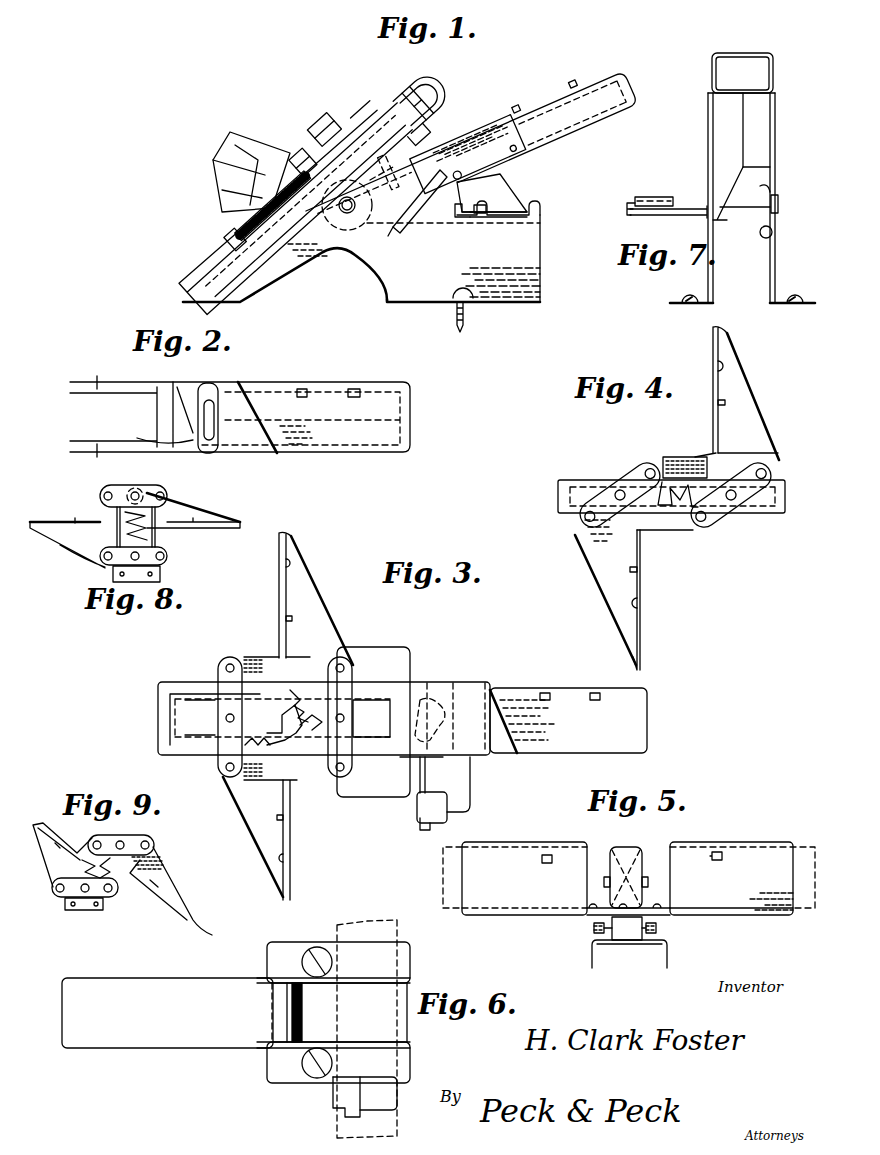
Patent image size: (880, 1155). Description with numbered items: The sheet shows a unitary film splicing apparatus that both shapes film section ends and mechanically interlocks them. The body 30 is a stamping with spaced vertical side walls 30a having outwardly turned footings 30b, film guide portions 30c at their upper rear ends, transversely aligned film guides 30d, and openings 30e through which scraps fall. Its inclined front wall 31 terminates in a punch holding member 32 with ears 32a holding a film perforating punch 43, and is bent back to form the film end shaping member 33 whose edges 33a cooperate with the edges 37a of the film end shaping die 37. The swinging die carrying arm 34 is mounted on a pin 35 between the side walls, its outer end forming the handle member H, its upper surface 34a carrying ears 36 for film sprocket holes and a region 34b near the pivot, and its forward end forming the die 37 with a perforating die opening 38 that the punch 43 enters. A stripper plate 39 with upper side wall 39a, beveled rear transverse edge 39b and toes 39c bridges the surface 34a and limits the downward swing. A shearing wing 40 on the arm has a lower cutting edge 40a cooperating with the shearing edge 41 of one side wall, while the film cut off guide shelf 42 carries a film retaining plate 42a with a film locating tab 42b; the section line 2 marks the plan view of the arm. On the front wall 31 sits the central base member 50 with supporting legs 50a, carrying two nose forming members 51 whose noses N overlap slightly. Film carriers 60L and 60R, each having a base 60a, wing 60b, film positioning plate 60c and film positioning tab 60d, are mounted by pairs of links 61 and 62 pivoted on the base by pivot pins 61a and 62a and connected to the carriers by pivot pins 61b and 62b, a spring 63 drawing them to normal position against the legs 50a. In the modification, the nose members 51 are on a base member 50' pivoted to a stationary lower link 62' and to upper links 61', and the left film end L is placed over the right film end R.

In FIG. 1, the section line 2 is at (625, 73).
In FIG. 1, the body 30 is at (292, 273).
In FIG. 7, the body 30 is at (708, 135).
In FIG. 1, the side walls 30a is at (545, 275).
In FIG. 7, the side walls 30a is at (748, 292).
In FIG. 1, the footings 30b is at (488, 302).
In FIG. 7, the footings 30b is at (810, 298).
In FIG. 3, the footings 30b is at (395, 648).
In FIG. 6, the footings 30b is at (296, 950).
In FIG. 1, the film guide portions 30c is at (548, 211).
In FIG. 6, the film guide portions 30c is at (412, 1040).
In FIG. 6, the film guide 30d is at (335, 1005).
In FIG. 1, the openings 30e is at (376, 277).
In FIG. 1, the front wall 31 is at (380, 108).
In FIG. 3, the front wall 31 is at (483, 692).
In FIG. 6, the front wall 31 is at (167, 1013).
In FIG. 1, the punch holding member 32 is at (430, 102).
In FIG. 1, the punch holding ears 32a is at (418, 86).
In FIG. 3, the punch holding ears 32a is at (455, 688).
In FIG. 1, the film end shaping member 33 is at (418, 138).
In FIG. 3, the film end shaping member 33 is at (428, 682).
In FIG. 3, the edges 33a is at (470, 757).
In FIG. 1, the swinging die carrying arm 34 is at (530, 108).
In FIG. 2, the swinging die carrying arm 34 is at (194, 452).
In FIG. 1, the film receiving surface 34a is at (604, 72).
In FIG. 2, the film receiving surface 34a is at (330, 445).
In FIG. 3, the film receiving surface 34a is at (640, 722).
In FIG. 1, the slot 34b is at (370, 177).
In FIG. 2, the slot 34b is at (157, 405).
In FIG. 1, the pin 35 is at (345, 226).
In FIG. 7, the pin 35 is at (742, 209).
In FIG. 1, the ears 36 is at (575, 80).
In FIG. 2, the ears 36 is at (300, 388).
In FIG. 3, the ears 36 is at (594, 692).
In FIG. 1, the film end shaping die 37 is at (413, 210).
In FIG. 2, the film end shaping die 37 is at (172, 385).
In FIG. 2, the edges 37a is at (150, 438).
In FIG. 2, the perforating die opening 38 is at (214, 388).
In FIG. 1, the stripper plate 39 is at (480, 123).
In FIG. 2, the stripper plate 39 is at (247, 402).
In FIG. 3, the stripper plate 39 is at (500, 700).
In FIG. 1, the upper side wall 39a is at (494, 121).
In FIG. 2, the upper side wall 39a is at (262, 450).
In FIG. 2, the rear transverse edge 39b is at (265, 432).
In FIG. 3, the rear transverse edge 39b is at (525, 750).
In FIG. 1, the toes 39c is at (436, 237).
In FIG. 1, the shearing wing 40 is at (500, 204).
In FIG. 7, the shearing wing 40 is at (766, 189).
In FIG. 7, the lower cutting edge 40a is at (773, 237).
In FIG. 7, the shearing edge 41 is at (779, 200).
In FIG. 1, the film cut off guide shelf 42 is at (520, 221).
In FIG. 7, the film cut off guide shelf 42 is at (690, 208).
In FIG. 3, the film cut off guide shelf 42 is at (472, 803).
In FIG. 6, the film cut off guide shelf 42 is at (385, 1098).
In FIG. 1, the film retaining plate 42a is at (484, 218).
In FIG. 7, the film retaining plate 42a is at (655, 195).
In FIG. 3, the film retaining plate 42a is at (419, 804).
In FIG. 1, the film locating tab 42b is at (461, 219).
In FIG. 7, the film locating tab 42b is at (630, 214).
In FIG. 3, the film locating tab 42b is at (425, 828).
In FIG. 6, the film locating tab 42b is at (333, 1114).
In FIG. 1, the film perforating punch 43 is at (440, 84).
In FIG. 3, the film perforating punch 43 is at (445, 738).
In FIG. 1, the central base member 50 is at (324, 119).
In FIG. 3, the central base member 50 is at (211, 699).
In FIG. 1, the supporting legs 50a is at (338, 130).
In FIG. 3, the supporting legs 50a is at (200, 694).
In FIG. 5, the supporting legs 50a is at (622, 925).
In FIG. 8, the base member 50' is at (135, 530).
In FIG. 9, the base member 50' is at (150, 878).
In FIG. 1, the nose forming members 51 is at (213, 148).
In FIG. 8, the nose forming members 51 is at (110, 522).
In FIG. 4, the nose forming members 51 is at (660, 530).
In FIG. 3, the nose forming members 51 is at (285, 736).
In FIG. 9, the nose forming members 51 is at (70, 892).
In FIG. 5, the nose forming members 51 is at (640, 850).
In FIG. 1, the links 61 is at (300, 137).
In FIG. 4, the links 61 is at (731, 503).
In FIG. 3, the links 61 is at (356, 714).
In FIG. 8, the links 61' is at (122, 484).
In FIG. 4, the pivot pin 61a is at (736, 500).
In FIG. 3, the pivot pin 61a is at (346, 718).
In FIG. 3, the pivot pins 61b is at (228, 663).
In FIG. 1, the links 62 is at (212, 220).
In FIG. 4, the links 62 is at (620, 483).
In FIG. 3, the links 62 is at (217, 720).
In FIG. 8, the stationary lower link 62' is at (150, 544).
In FIG. 9, the stationary lower link 62' is at (90, 903).
In FIG. 4, the pivot pin 62a is at (612, 478).
In FIG. 3, the pivot pin 62a is at (215, 720).
In FIG. 3, the pivot pins 62b is at (345, 657).
In FIG. 5, the pivot pins 62b is at (657, 929).
In FIG. 1, the spring 63 is at (273, 214).
In FIG. 3, the spring 63 is at (313, 665).
In FIG. 4, the base 60a is at (670, 456).
In FIG. 3, the base 60a is at (260, 658).
In FIG. 4, the wing 60b is at (735, 380).
In FIG. 3, the wing 60b is at (330, 630).
In FIG. 5, the wing 60b is at (506, 918).
In FIG. 4, the film positioning plate 60c is at (715, 369).
In FIG. 3, the film positioning plate 60c is at (284, 565).
In FIG. 5, the film positioning plate 60c is at (512, 860).
In FIG. 4, the film positioning tab 60d is at (727, 403).
In FIG. 3, the film positioning tab 60d is at (300, 614).
In FIG. 5, the film positioning tab 60d is at (720, 852).
In FIG. 4, the left film carrier 60L is at (745, 411).
In FIG. 3, the left film carrier 60L is at (325, 580).
In FIG. 5, the left film carrier 60L is at (470, 918).
In FIG. 4, the right film carrier 60R is at (642, 625).
In FIG. 3, the right film carrier 60R is at (262, 842).
In FIG. 5, the right film carrier 60R is at (758, 918).
In FIG. 1, the handle member H is at (608, 115).
In FIG. 7, the handle member H is at (758, 74).
In FIG. 2, the handle member H is at (385, 428).
In FIG. 3, the handle member H is at (640, 706).
In FIG. 4, the left film end L is at (696, 456).
In FIG. 3, the left film end L is at (288, 536).
In FIG. 5, the left film end L is at (515, 877).
In FIG. 4, the right film end R is at (657, 585).
In FIG. 3, the right film end R is at (295, 903).
In FIG. 5, the right film end R is at (742, 877).
In FIG. 3, the nose N is at (286, 690).